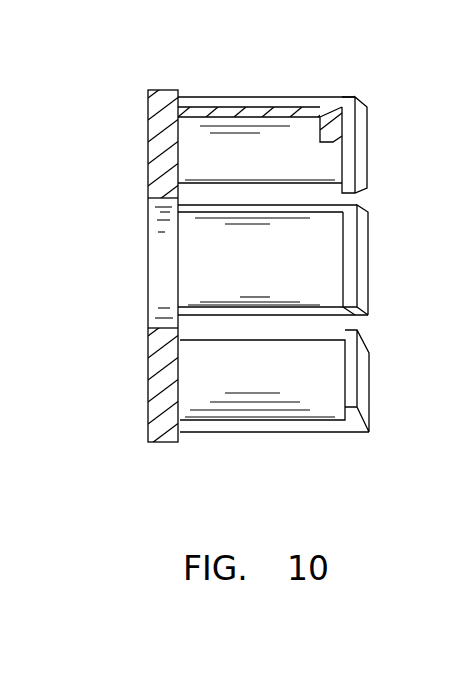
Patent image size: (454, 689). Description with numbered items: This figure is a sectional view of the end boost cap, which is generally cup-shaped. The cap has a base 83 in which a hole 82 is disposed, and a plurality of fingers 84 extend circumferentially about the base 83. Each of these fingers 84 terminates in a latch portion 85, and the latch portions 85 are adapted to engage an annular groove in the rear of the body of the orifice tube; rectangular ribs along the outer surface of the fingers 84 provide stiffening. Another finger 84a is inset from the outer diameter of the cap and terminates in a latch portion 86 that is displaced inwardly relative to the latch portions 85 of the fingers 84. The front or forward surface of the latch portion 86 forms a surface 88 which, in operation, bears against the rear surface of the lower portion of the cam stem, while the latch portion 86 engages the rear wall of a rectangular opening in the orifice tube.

The hole 82 is at (148, 300).
The base 83 is at (148, 163).
The fingers 84 is at (353, 96).
The finger 84a is at (310, 110).
The latch portions 85 is at (343, 381).
The latch portion 86 is at (318, 138).
The surface 88 is at (342, 130).